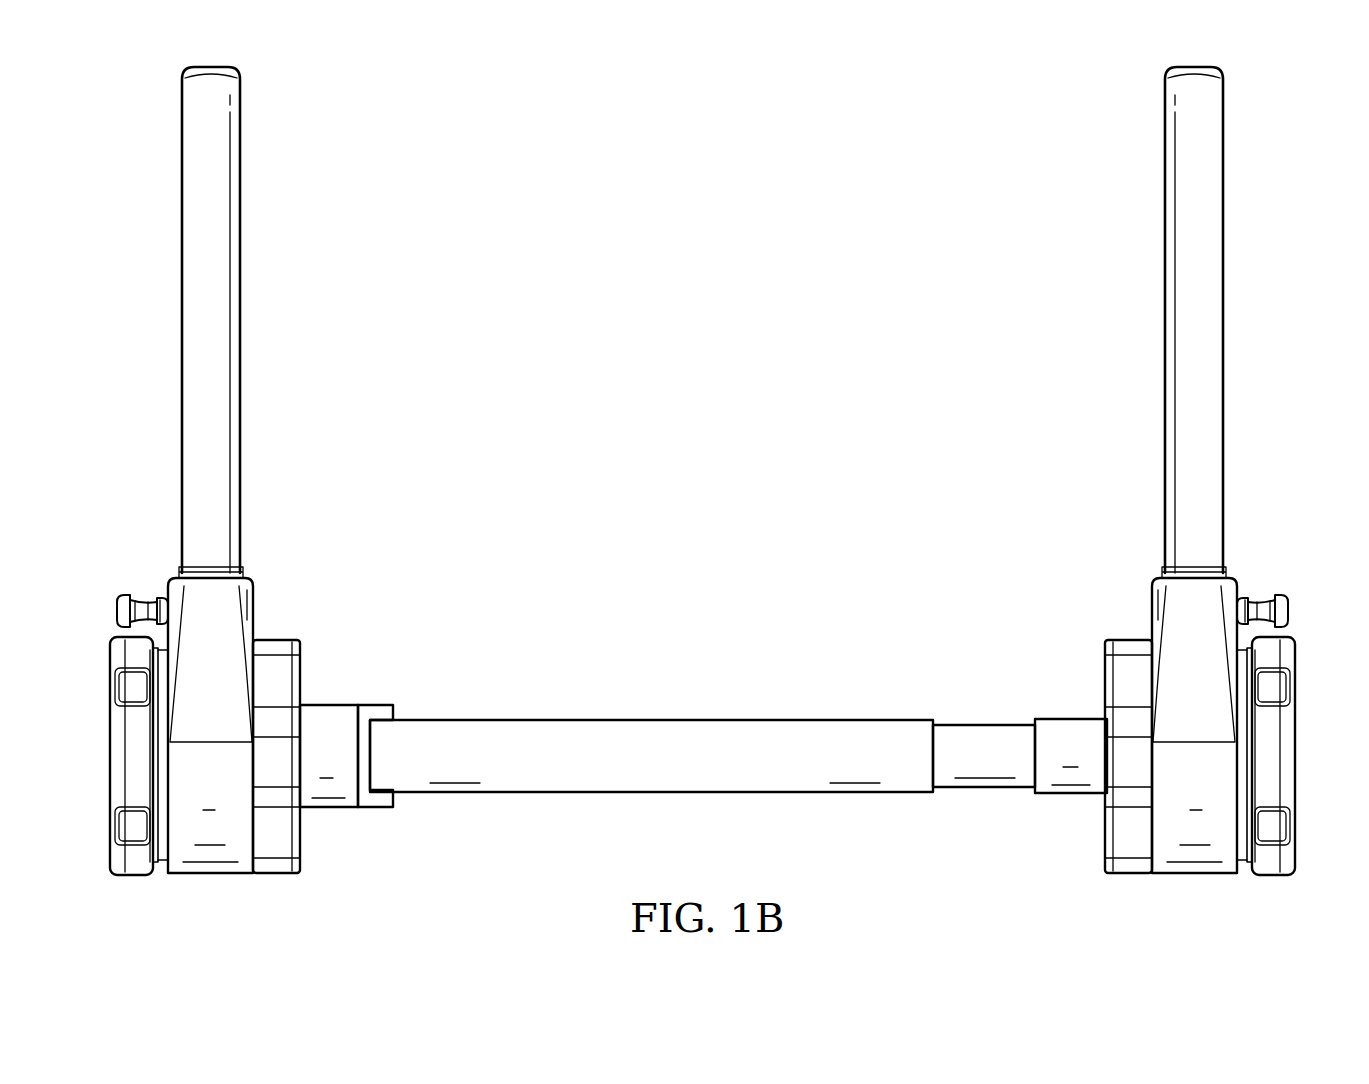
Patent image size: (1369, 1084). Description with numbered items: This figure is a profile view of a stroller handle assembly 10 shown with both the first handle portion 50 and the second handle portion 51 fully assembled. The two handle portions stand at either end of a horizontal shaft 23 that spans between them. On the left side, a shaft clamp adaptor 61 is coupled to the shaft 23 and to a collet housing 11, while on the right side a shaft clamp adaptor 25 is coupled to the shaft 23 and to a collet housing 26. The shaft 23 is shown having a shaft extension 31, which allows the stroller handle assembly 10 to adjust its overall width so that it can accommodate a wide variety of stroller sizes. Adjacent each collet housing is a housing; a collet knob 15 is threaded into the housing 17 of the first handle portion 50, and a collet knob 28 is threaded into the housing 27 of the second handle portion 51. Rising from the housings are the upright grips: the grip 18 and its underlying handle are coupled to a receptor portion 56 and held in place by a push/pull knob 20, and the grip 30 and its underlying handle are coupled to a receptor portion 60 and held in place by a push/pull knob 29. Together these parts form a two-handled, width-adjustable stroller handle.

The stroller handle assembly 10 is at (915, 135).
The first handle portion 50 is at (263, 423).
The second handle portion 51 is at (1135, 533).
The grip 18 is at (181, 325).
The grip 30 is at (1224, 325).
The push/pull knob 20 is at (117, 612).
The push/pull knob 29 is at (1288, 612).
The collet knob 15 is at (136, 876).
The collet knob 28 is at (1265, 876).
The housing 17 is at (212, 874).
The housing 27 is at (1194, 874).
The receptor portion 56 is at (247, 630).
The receptor portion 60 is at (1158, 608).
The collet housing 11 is at (280, 874).
The collet housing 26 is at (1128, 875).
The shaft clamp adaptor 61 is at (334, 703).
The shaft clamp adaptor 25 is at (1075, 718).
The shaft 23 is at (778, 718).
The shaft extension 31 is at (993, 795).